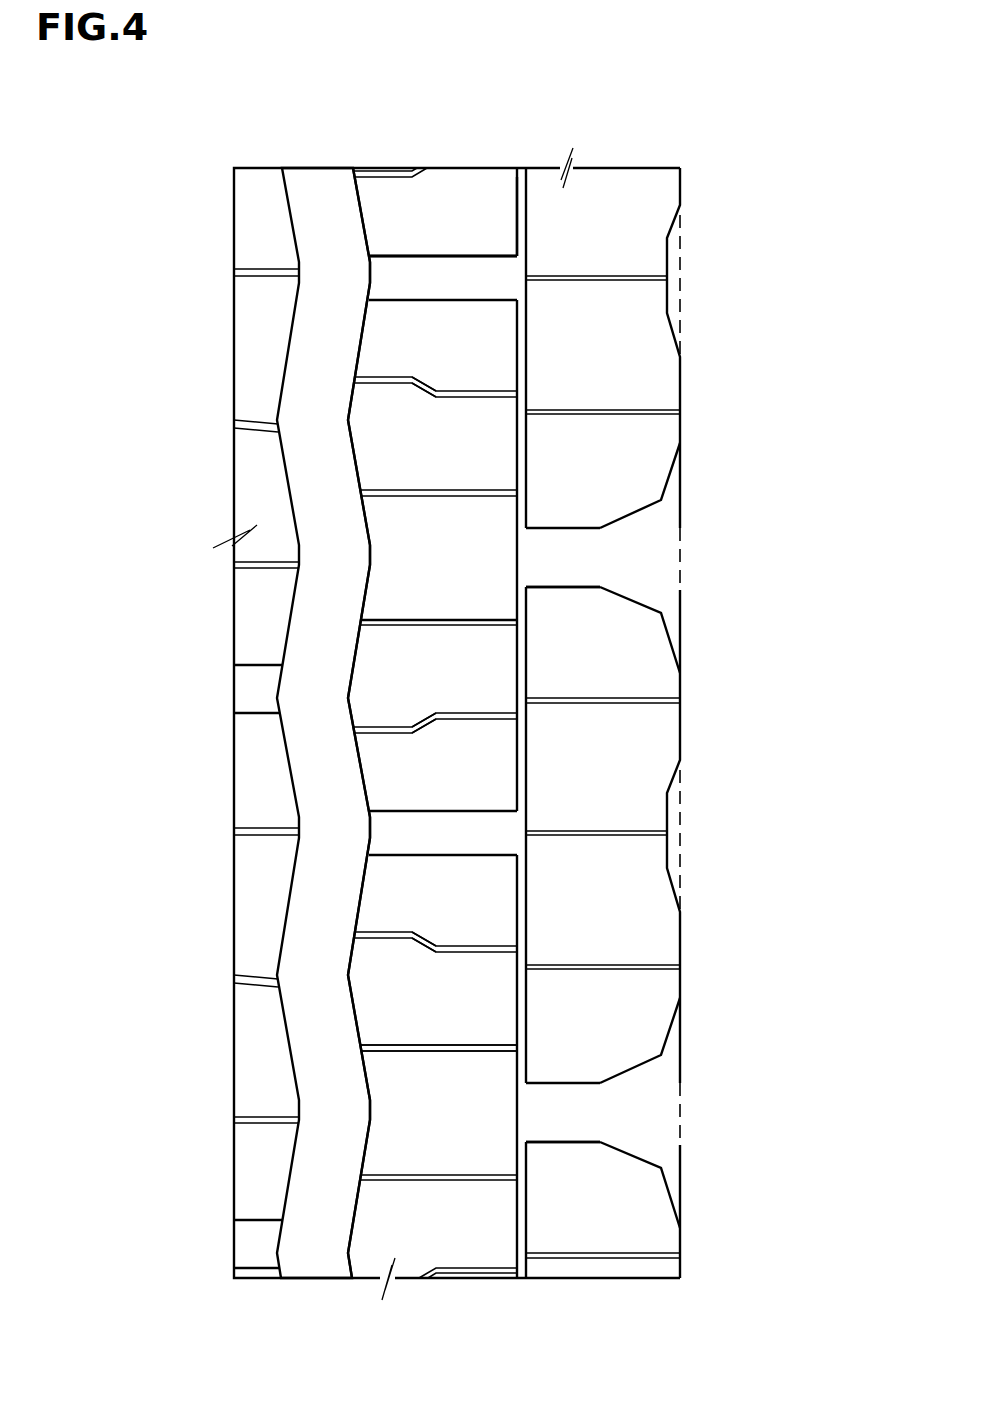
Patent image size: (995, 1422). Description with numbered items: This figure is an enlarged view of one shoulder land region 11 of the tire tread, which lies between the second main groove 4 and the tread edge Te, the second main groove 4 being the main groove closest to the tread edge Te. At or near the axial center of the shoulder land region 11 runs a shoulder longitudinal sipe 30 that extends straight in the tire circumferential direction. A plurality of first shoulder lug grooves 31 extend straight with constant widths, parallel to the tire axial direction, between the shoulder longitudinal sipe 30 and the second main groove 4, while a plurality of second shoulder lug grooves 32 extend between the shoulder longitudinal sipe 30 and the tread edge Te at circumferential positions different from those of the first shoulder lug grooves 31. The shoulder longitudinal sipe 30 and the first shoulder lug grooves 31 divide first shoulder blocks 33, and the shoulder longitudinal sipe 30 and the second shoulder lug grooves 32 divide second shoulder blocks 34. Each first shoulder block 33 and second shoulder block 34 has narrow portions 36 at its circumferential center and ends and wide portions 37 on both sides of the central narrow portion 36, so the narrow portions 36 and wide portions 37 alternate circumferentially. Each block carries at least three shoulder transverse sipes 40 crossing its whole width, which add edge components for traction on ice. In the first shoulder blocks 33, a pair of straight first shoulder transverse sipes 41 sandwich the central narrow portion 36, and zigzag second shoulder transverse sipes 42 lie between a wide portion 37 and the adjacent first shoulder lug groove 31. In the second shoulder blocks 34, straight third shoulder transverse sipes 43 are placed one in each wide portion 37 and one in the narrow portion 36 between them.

The second main groove 4 is at (319, 212).
The shoulder land region 11 is at (472, 191).
The shoulder longitudinal sipe 30 is at (529, 330).
The first shoulder lug groove 31 is at (427, 286).
The second shoulder lug groove 32 is at (597, 551).
The first shoulder block 33 is at (349, 524).
The second shoulder block 34 is at (696, 390).
The narrow portion 36 is at (435, 586).
The wide portion 37 is at (419, 412).
The shoulder transverse sipe 40 is at (414, 1046).
The first shoulder transverse sipe 41 is at (419, 490).
The second shoulder transverse sipe 42 is at (427, 728).
The third shoulder transverse sipe 43 is at (602, 413).
The tread edge Te is at (682, 370).